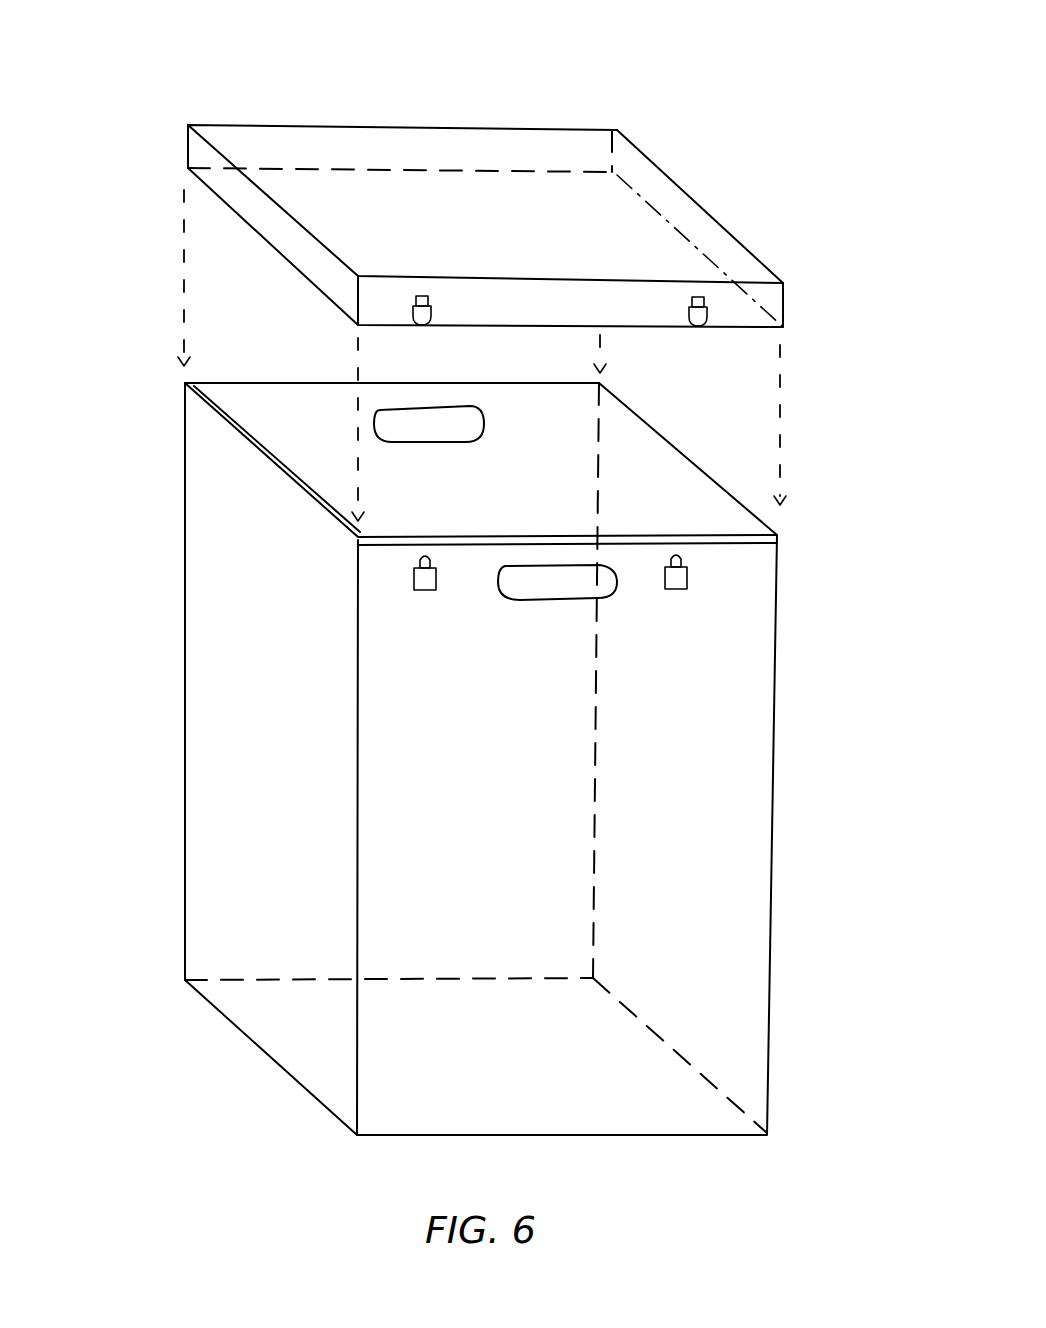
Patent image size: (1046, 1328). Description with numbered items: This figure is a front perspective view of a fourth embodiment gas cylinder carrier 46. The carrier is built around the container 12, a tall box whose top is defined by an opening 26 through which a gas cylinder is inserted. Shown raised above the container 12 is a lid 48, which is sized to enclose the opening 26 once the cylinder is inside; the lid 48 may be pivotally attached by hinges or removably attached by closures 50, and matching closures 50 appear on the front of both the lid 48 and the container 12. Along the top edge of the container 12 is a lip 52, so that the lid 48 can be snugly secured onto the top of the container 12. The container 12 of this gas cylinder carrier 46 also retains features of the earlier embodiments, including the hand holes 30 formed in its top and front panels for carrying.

The container 12 is at (777, 660).
The opening 26 is at (478, 481).
The hand holes 30 is at (618, 594).
The gas cylinder carrier 46 is at (850, 796).
The lid 48 is at (385, 125).
The closures 50 is at (715, 300).
The lip 52 is at (222, 418).